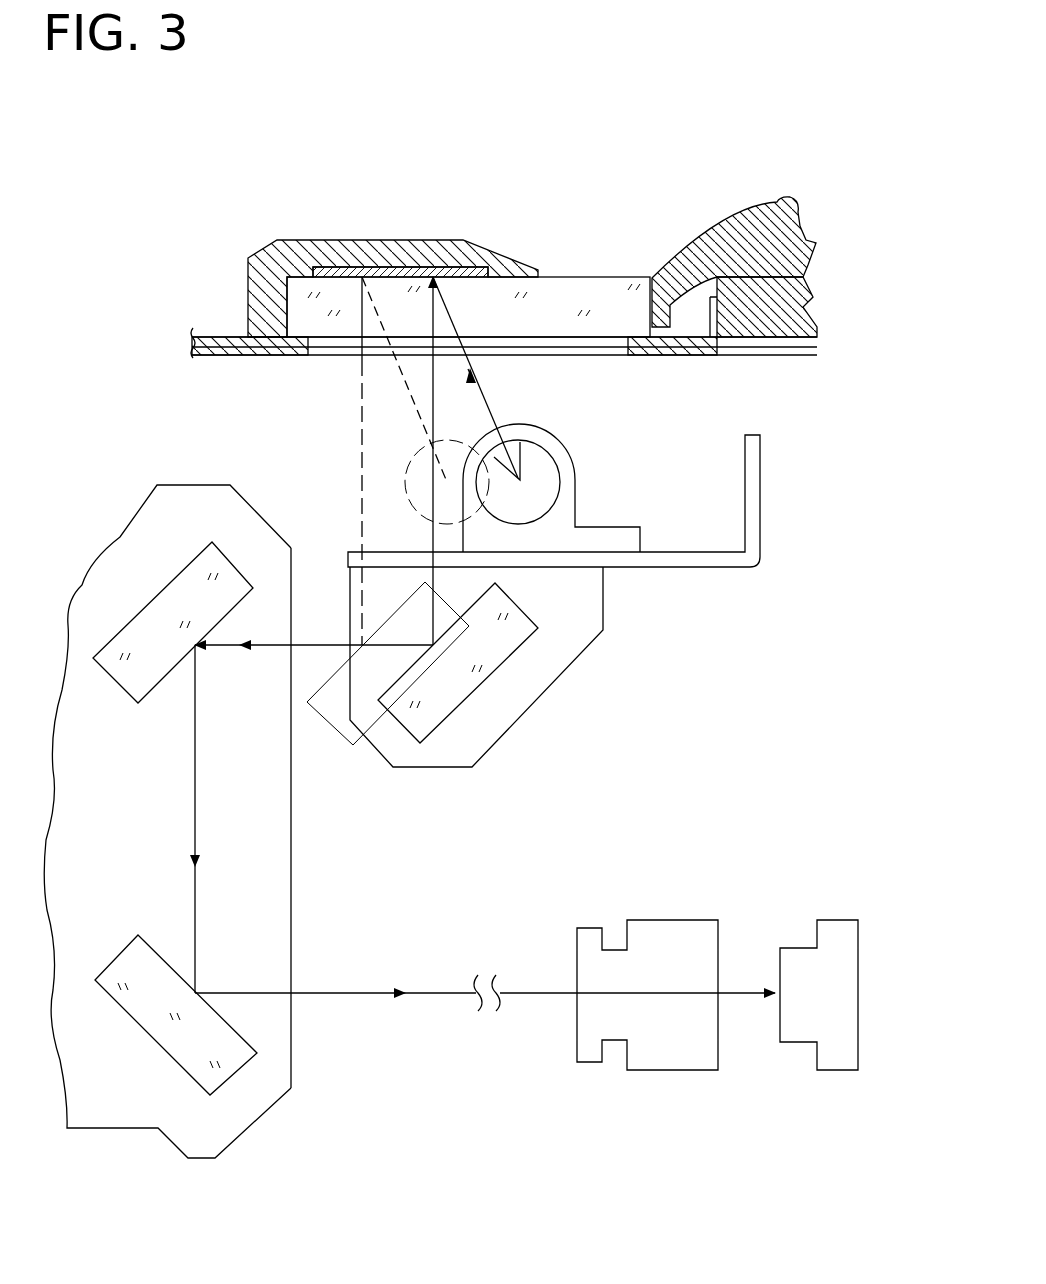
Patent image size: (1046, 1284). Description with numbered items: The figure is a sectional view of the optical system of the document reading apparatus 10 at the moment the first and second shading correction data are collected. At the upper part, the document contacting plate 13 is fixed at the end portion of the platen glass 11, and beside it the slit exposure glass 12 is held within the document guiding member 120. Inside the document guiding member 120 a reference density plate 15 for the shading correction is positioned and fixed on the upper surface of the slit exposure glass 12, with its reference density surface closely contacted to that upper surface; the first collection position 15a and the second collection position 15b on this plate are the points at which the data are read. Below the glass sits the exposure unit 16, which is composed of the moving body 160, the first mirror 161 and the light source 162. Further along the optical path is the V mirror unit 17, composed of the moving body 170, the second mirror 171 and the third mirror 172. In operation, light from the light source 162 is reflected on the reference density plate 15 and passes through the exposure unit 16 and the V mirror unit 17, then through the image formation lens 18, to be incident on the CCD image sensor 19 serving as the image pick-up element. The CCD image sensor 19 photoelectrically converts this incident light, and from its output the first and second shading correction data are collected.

The document reading apparatus 10 is at (561, 255).
The platen glass 11 is at (798, 305).
The slit exposure glass 12 is at (603, 303).
The document contacting plate 13 is at (795, 215).
The reference density plate 15 is at (399, 268).
The first collection position 15a is at (433, 277).
The second collection position 15b is at (362, 275).
The document guiding member 120 is at (289, 251).
The exposure unit 16 is at (578, 673).
The moving body 160 is at (698, 569).
The first mirror 161 is at (499, 670).
The light source 162 is at (541, 456).
The V mirror unit 17 is at (305, 882).
The moving body 170 is at (292, 1036).
The second mirror 171 is at (167, 584).
The third mirror 172 is at (136, 1024).
The image formation lens 18 is at (672, 918).
The CCD image sensor 19 is at (835, 918).